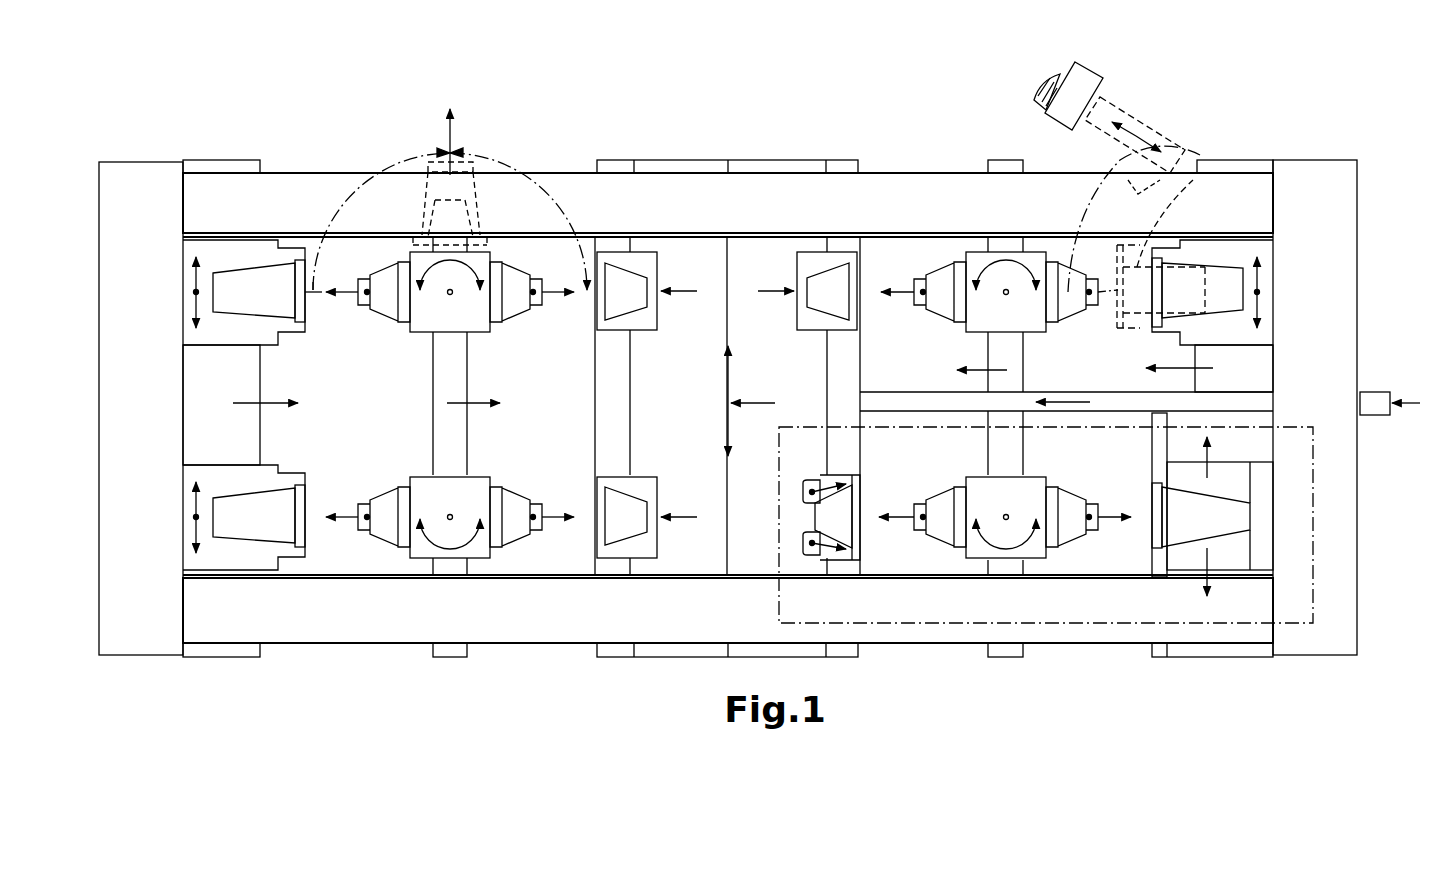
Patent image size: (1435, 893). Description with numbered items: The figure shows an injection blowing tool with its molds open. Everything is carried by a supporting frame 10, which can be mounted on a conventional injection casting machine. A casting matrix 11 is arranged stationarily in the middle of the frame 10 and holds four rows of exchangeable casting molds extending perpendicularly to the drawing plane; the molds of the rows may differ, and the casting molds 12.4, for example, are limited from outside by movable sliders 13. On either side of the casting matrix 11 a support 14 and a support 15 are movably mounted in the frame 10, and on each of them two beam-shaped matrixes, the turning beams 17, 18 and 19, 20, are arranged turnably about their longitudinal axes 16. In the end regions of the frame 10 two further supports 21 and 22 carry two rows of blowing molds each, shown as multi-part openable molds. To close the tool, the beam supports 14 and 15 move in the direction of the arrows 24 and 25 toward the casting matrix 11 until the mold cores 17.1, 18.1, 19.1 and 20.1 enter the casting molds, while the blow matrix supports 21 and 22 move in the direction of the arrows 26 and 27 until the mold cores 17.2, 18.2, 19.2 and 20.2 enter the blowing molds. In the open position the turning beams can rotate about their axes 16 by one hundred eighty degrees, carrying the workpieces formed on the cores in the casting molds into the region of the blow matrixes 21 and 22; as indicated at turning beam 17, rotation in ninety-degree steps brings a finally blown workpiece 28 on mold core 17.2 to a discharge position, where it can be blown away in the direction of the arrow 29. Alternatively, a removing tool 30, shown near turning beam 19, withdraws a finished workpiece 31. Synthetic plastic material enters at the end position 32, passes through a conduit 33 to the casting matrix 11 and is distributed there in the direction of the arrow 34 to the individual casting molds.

The supporting frame 10 is at (152, 178).
The casting matrix 11 is at (656, 395).
The casting mold 12.4 is at (810, 508).
The movable sliders 13 is at (814, 480).
The support 14 is at (460, 362).
The support 15 is at (1024, 352).
The longitudinal axes 16 is at (448, 295).
The turning beam 17 is at (422, 334).
The mold core 17.1 is at (508, 277).
The mold core 17.2 is at (382, 283).
The turning beam 18 is at (483, 485).
The mold core 18.1 is at (520, 530).
The mold core 18.2 is at (382, 528).
The turning beam 19 is at (1030, 258).
The mold core 19.1 is at (942, 277).
The mold core 19.2 is at (1072, 274).
The turning beam 20 is at (1040, 558).
The mold core 20.1 is at (930, 498).
The mold core 20.2 is at (1082, 505).
The blow matrix support 21 is at (250, 378).
The blow matrix support 22 is at (1260, 380).
The arrow 24 is at (483, 398).
The arrow 25 is at (977, 364).
The arrow 26 is at (283, 396).
The arrow 27 is at (1145, 368).
The finally blown workpiece 28 is at (468, 185).
The arrow 29 is at (448, 131).
The removing tool 30 is at (1040, 112).
The finally blown workpiece 31 is at (1140, 120).
The end position 32 is at (1372, 392).
The conduit 33 is at (896, 390).
The arrow 34 is at (683, 293).